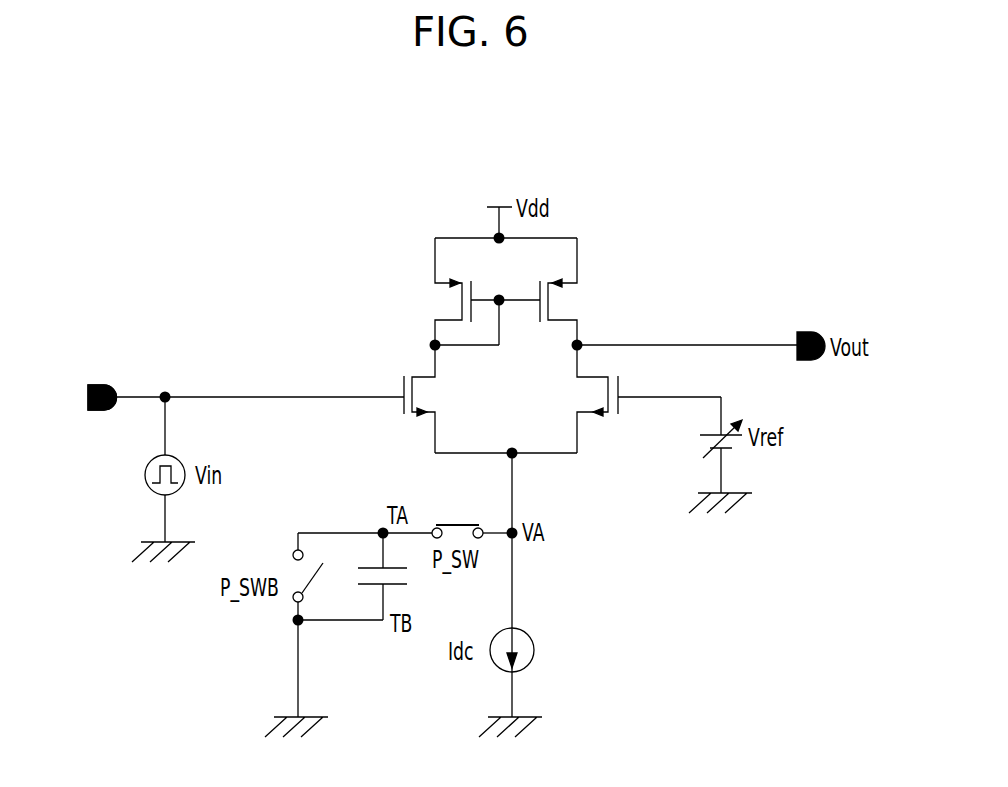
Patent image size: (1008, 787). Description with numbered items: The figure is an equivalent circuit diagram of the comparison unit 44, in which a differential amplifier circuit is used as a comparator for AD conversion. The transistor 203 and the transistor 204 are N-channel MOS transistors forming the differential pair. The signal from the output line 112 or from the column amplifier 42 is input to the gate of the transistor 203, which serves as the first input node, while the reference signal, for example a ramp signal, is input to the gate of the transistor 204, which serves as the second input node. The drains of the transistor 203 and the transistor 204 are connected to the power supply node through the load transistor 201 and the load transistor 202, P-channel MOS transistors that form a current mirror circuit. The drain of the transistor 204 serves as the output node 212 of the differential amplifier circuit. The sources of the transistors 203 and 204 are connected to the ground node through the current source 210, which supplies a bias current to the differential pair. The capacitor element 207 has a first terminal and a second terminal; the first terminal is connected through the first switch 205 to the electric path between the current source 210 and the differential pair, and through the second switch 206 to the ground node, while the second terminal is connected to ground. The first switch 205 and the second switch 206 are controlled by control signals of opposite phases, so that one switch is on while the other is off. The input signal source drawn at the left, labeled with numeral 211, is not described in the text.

The comparison unit 44 is at (666, 182).
The column amplifier 42 is at (110, 383).
The output line 112 is at (102, 397).
The load transistor 201 is at (442, 302).
The load transistor 202 is at (582, 299).
The transistor 203 is at (427, 392).
The transistor 204 is at (588, 395).
The first switch 205 is at (462, 524).
The second switch 206 is at (292, 568).
The capacitor element 207 is at (406, 579).
The current source 210 is at (536, 641).
The input signal source Vin 211 is at (145, 475).
The output node 212 is at (811, 361).